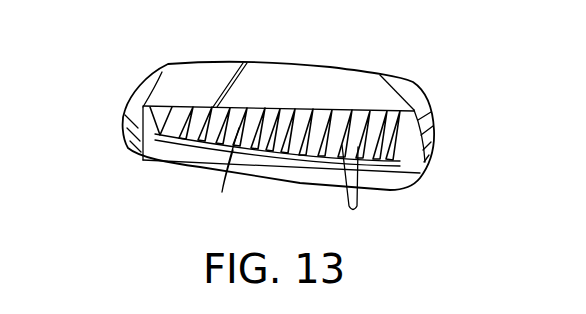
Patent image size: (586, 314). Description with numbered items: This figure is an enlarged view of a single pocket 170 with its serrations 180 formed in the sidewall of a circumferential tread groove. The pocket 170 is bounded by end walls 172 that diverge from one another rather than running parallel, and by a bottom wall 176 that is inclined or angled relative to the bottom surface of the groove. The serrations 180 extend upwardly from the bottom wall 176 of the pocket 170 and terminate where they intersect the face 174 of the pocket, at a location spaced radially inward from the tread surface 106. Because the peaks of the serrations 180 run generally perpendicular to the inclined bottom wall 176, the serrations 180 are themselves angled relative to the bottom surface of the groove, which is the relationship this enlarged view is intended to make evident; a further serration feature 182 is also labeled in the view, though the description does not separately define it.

The tread surface 106 is at (207, 72).
The pocket 170 is at (331, 77).
The end walls 172 is at (148, 122).
The face 174 is at (283, 109).
The bottom wall 176 is at (207, 152).
The serrations 180 is at (356, 210).
The bristle strand 182 is at (222, 192).